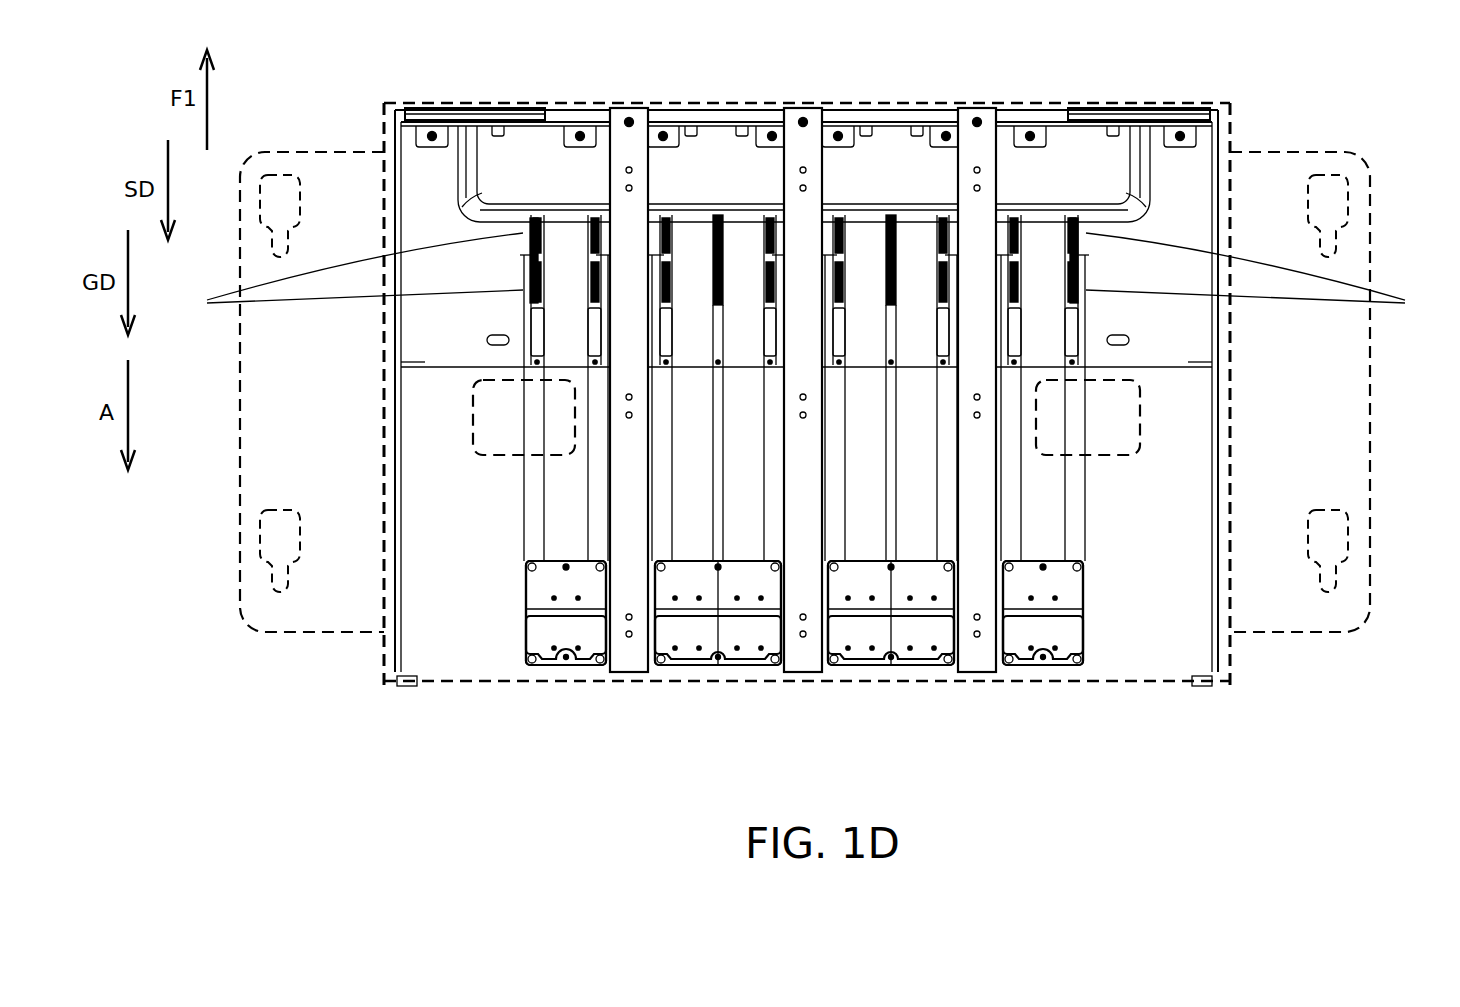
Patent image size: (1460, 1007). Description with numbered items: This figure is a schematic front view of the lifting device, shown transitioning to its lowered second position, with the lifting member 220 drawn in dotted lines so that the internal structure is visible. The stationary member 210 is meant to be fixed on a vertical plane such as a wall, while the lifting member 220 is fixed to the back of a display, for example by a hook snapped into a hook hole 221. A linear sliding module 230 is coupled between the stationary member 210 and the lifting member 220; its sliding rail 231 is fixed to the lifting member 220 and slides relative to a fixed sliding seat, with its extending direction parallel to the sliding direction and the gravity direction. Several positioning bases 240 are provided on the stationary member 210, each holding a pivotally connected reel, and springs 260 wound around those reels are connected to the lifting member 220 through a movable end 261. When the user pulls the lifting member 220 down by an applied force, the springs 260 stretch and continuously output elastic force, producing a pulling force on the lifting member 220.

The stationary member 210 is at (898, 160).
The lifting member 220 is at (285, 412).
The hook hole 221 is at (282, 537).
The linear sliding module 230 is at (629, 390).
The sliding rail 231 is at (795, 140).
The positioning base 240 is at (805, 267).
The spring 260 is at (562, 220).
The movable end 261 is at (573, 598).